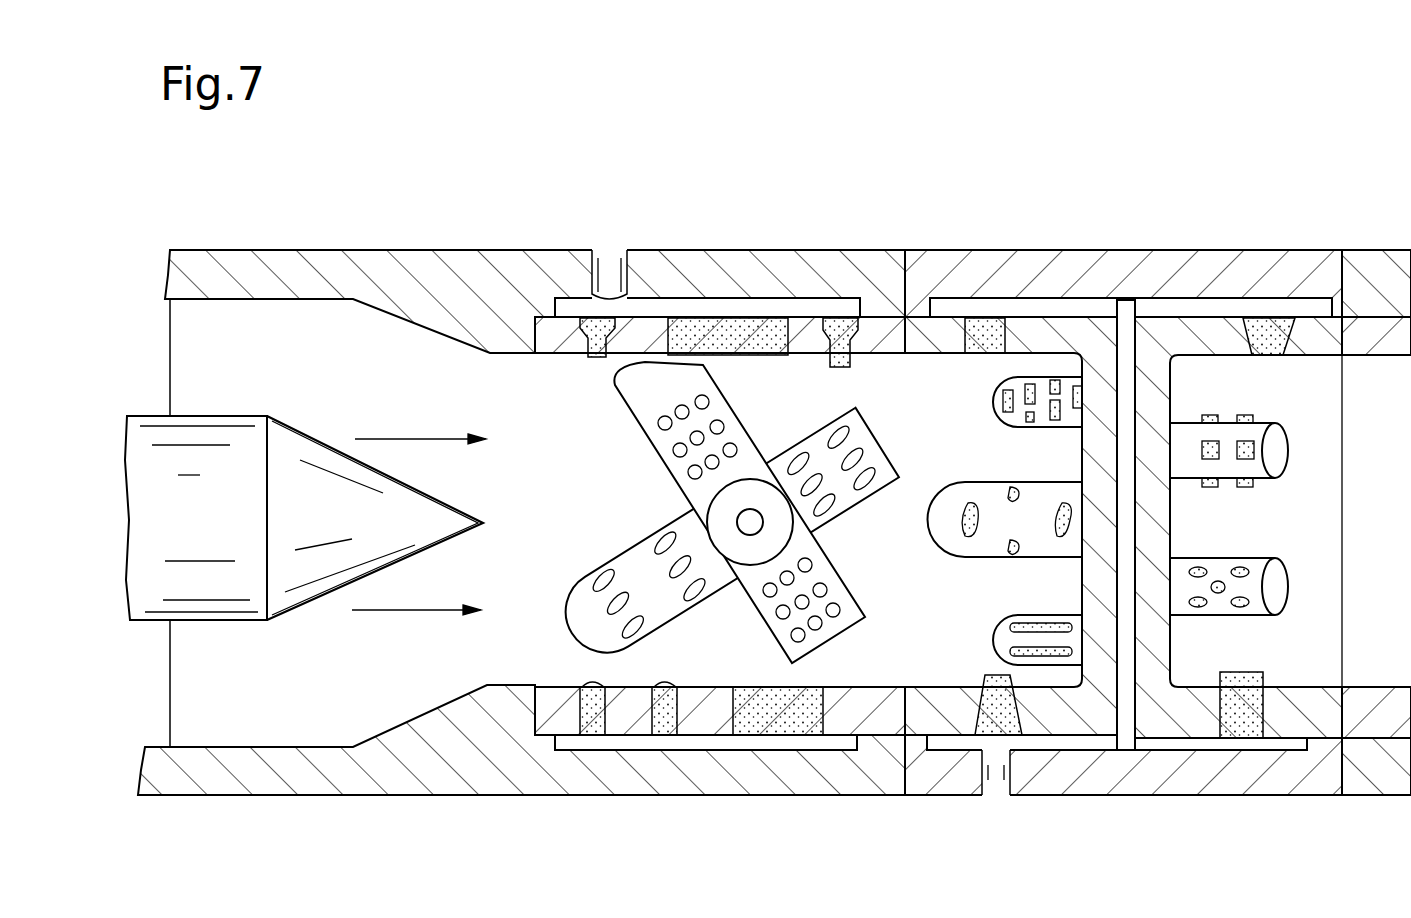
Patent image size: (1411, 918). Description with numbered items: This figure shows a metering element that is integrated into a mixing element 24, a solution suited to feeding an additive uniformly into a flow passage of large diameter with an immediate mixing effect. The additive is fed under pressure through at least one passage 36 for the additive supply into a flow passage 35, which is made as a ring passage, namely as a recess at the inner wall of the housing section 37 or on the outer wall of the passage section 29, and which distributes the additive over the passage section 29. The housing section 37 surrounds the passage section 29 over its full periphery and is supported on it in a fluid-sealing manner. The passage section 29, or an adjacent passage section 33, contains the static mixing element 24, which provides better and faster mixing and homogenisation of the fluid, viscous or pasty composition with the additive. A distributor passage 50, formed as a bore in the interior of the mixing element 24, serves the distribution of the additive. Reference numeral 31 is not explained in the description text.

The adjacent passage section 33 is at (418, 262).
The passage for the additive supply 36 is at (601, 258).
The porous insert 31 is at (600, 323).
The housing section 37 is at (1006, 262).
The distributor passage 50 is at (1136, 318).
The passage section 29 is at (552, 722).
The flow passage 35 is at (689, 746).
The static mixing element 24 is at (817, 642).